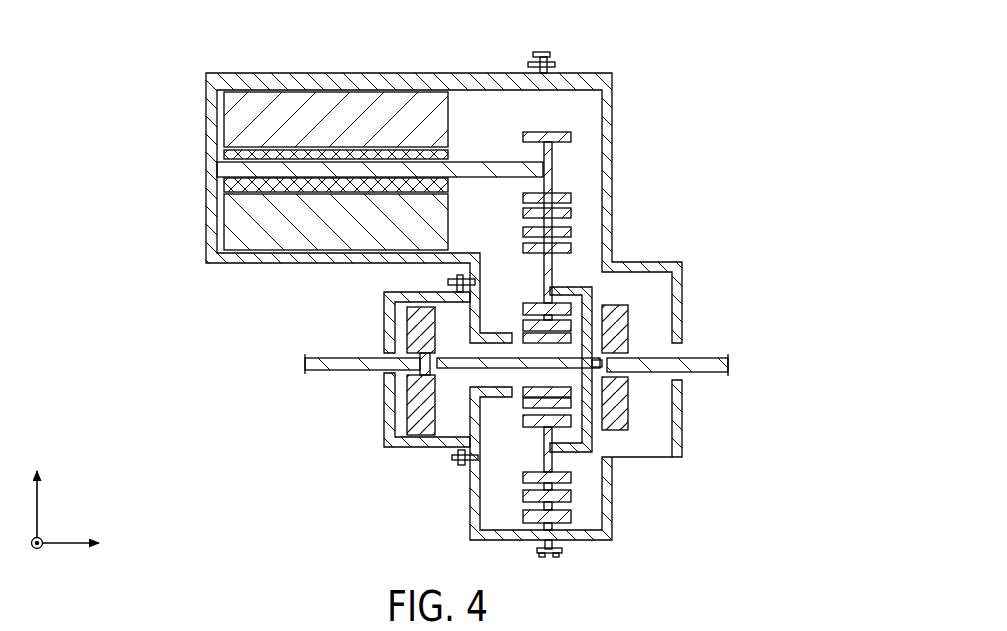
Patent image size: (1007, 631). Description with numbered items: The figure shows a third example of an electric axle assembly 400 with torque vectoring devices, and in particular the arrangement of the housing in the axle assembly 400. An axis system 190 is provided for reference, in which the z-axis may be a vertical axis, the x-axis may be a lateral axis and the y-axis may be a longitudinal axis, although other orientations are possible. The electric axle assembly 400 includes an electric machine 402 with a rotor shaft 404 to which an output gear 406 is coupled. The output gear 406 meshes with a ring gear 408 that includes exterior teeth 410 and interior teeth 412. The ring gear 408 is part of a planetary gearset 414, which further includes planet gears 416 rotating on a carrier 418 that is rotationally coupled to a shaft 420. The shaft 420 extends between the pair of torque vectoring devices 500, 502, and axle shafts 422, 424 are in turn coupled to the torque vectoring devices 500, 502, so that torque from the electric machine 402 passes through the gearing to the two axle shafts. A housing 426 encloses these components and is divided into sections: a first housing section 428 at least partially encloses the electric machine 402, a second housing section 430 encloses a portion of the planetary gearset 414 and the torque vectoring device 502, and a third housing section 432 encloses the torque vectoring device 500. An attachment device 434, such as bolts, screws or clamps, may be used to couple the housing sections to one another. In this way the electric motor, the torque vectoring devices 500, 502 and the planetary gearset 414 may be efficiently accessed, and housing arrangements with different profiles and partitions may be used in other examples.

The electric axle assembly 400 is at (90, 45).
The electric machine 402 is at (216, 117).
The rotor shaft 404 is at (492, 160).
The output gear 406 is at (549, 130).
The ring gear 408 is at (521, 222).
The exterior teeth 410 is at (561, 204).
The interior teeth 412 is at (567, 240).
The planetary gearset 414 is at (598, 217).
The planet gears 416 is at (542, 294).
The carrier 418 is at (558, 287).
The shaft 420 is at (561, 371).
The axle shaft 422 is at (342, 373).
The axle shaft 424 is at (712, 375).
The housing 426 is at (551, 34).
The first housing section 428 is at (351, 77).
The second housing section 430 is at (449, 289).
The third housing section 432 is at (388, 297).
The attachment device 434 is at (452, 459).
The torque vectoring device 500 is at (404, 323).
The torque vectoring device 502 is at (639, 322).
The axis system 190 is at (101, 487).